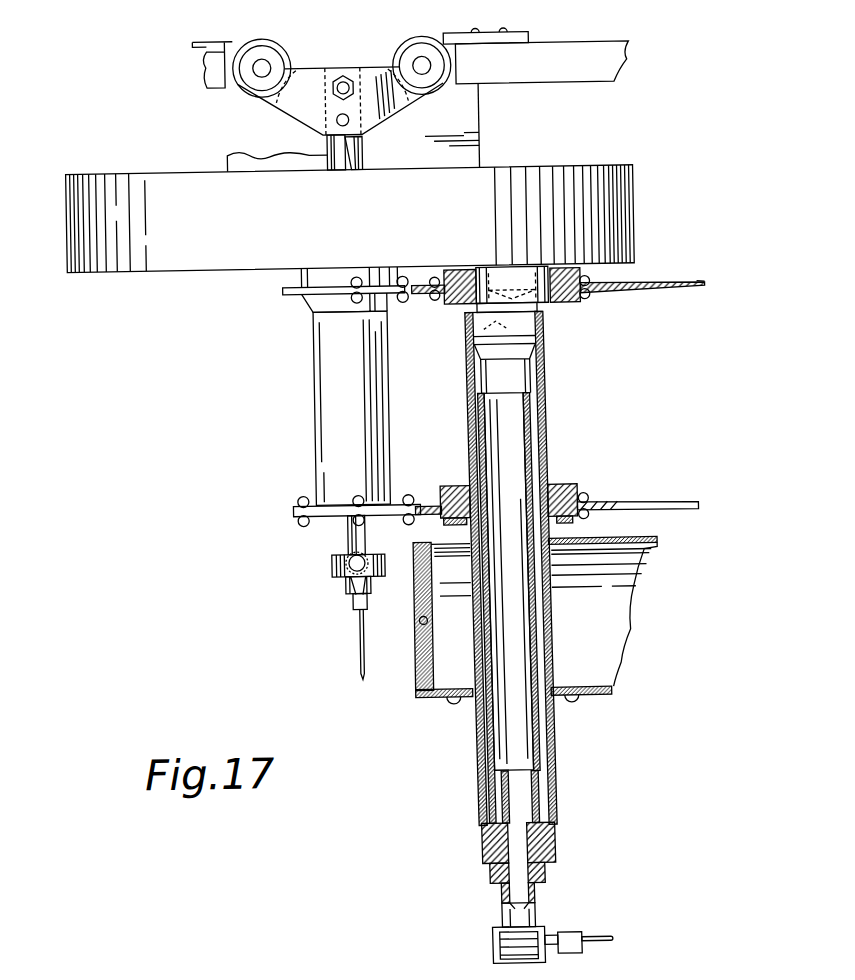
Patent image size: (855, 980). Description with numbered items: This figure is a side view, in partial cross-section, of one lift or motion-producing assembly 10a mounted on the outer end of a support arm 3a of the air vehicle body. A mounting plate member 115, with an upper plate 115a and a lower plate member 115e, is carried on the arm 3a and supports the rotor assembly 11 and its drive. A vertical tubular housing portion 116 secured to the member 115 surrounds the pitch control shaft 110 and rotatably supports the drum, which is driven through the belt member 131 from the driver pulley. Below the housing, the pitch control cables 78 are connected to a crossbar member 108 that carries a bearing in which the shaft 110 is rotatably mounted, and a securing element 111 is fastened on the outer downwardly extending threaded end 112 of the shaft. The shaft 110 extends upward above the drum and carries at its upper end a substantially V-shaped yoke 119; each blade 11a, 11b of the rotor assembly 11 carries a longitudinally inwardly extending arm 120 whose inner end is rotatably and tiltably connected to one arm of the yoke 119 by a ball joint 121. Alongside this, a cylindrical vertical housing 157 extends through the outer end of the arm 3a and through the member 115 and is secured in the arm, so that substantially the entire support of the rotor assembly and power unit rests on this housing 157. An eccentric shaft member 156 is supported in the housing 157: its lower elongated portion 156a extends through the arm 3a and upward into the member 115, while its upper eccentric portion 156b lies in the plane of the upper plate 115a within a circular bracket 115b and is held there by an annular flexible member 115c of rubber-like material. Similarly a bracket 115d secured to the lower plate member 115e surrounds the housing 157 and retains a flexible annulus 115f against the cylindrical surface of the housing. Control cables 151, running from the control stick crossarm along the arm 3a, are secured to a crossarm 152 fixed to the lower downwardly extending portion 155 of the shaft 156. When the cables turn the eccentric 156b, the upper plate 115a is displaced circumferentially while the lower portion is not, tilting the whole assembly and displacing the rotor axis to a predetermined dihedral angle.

The arm 3a is at (604, 698).
The lift or motion-producing assembly 10a is at (304, 392).
The rotor assembly 11 is at (613, 43).
The blade 11a is at (597, 77).
The blade 11b is at (224, 86).
The pitch control cable 78 is at (355, 642).
The crossbar member 108 is at (346, 563).
The pitch control shaft 110 is at (338, 145).
The securing element 111 is at (341, 583).
The threaded end 112 is at (345, 595).
The mounting plate member 115 is at (678, 292).
The upper plate 115a is at (700, 286).
The circular bracket 115b is at (443, 303).
The annular flexible member 115c is at (580, 307).
The bracket 115d is at (442, 487).
The lower plate member 115e is at (670, 502).
The flexible annulus 115f is at (558, 485).
The vertical tubular housing portion 116 is at (317, 348).
The V-shaped yoke 119 is at (402, 104).
The arm 120 is at (230, 46).
The ball joint 121 is at (269, 64).
The belt member 131 is at (643, 181).
The control cable 151 is at (584, 938).
The crossarm 152 is at (484, 939).
The lower downwardly extending portion 155 is at (521, 903).
The eccentric shaft member 156 is at (496, 744).
The lower elongated portion 156a is at (531, 612).
The upper eccentric portion 156b is at (530, 299).
The cylindrical vertical housing 157 is at (544, 397).